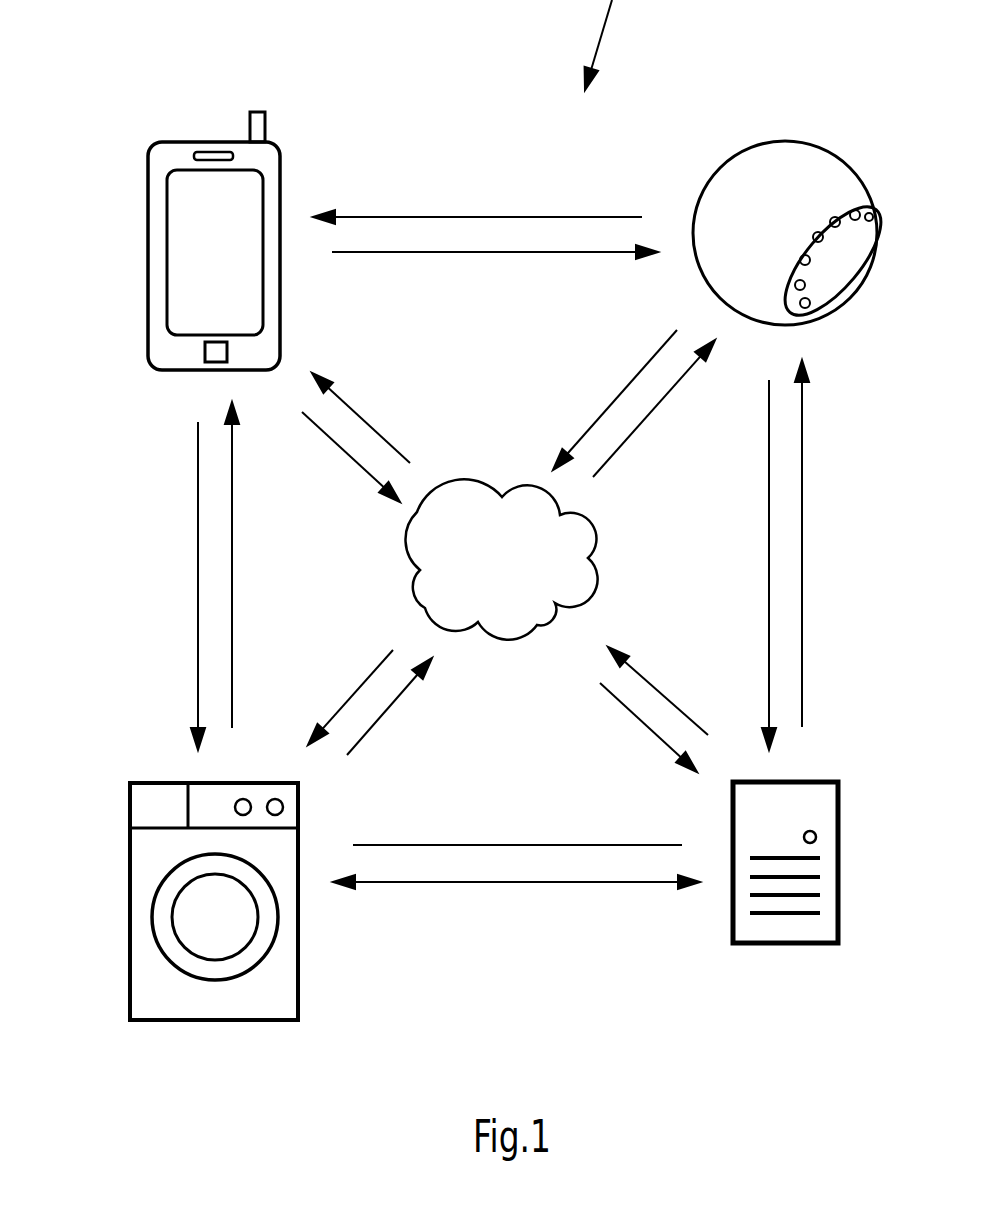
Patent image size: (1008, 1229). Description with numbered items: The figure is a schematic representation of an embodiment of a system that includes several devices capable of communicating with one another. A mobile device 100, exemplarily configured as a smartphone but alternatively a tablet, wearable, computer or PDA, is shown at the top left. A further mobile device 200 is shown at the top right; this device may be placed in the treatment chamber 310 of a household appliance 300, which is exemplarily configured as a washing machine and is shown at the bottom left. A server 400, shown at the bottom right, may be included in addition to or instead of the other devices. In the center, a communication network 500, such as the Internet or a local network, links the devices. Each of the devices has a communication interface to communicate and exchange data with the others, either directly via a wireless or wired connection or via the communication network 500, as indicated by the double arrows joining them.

The mobile device 100 is at (185, 142).
The mobile device 200 is at (803, 143).
The household appliance 300 is at (171, 935).
The treatment chamber 310 is at (193, 917).
The server 400 is at (807, 943).
The communication network 500 is at (526, 573).